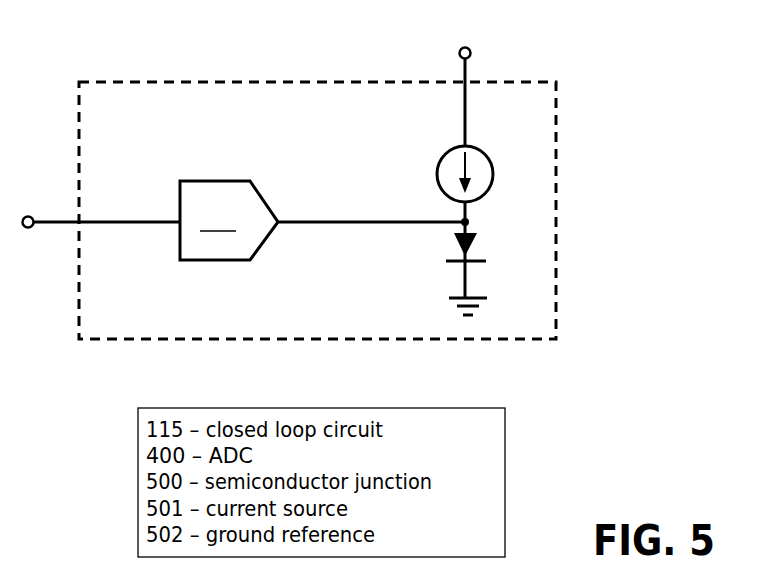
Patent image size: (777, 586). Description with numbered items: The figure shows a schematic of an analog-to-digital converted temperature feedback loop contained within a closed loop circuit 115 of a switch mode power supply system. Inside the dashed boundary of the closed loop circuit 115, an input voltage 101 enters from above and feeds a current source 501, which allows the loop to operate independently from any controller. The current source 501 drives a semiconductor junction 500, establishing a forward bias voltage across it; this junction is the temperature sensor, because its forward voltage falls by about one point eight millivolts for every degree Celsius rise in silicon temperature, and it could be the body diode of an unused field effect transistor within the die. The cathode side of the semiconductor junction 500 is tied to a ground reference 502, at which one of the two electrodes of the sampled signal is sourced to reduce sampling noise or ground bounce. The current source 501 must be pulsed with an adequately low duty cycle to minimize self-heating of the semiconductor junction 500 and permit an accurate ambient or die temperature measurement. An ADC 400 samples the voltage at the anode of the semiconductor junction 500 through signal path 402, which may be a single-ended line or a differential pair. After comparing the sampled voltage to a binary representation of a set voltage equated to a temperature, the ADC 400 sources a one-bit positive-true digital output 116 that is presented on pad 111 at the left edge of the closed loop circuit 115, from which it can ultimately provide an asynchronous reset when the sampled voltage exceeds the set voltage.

The closed loop circuit 115 is at (88, 81).
The ADC 400 is at (229, 220).
The semiconductor junction 500 is at (483, 236).
The current source 501 is at (494, 150).
The ground reference 502 is at (488, 302).
The input voltage 101 is at (469, 47).
The pad 111 is at (33, 228).
The output 116 is at (99, 216).
The signal path 402 is at (290, 219).